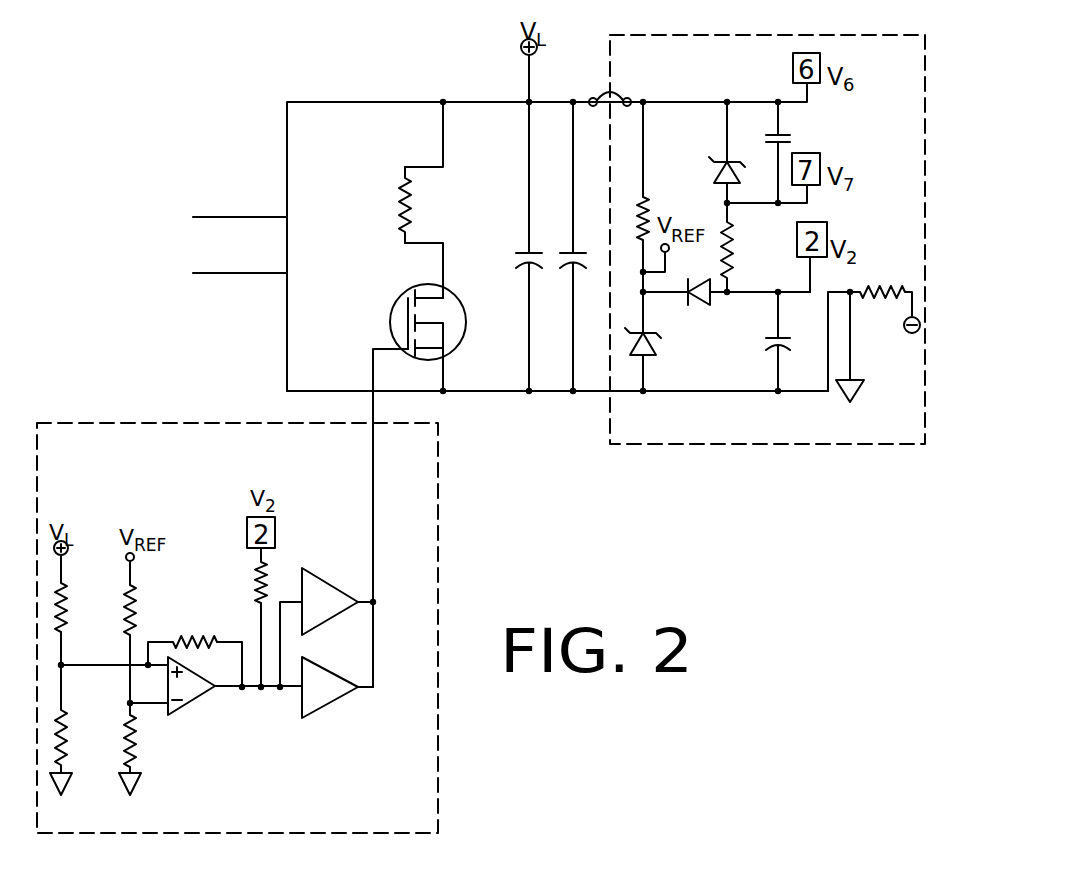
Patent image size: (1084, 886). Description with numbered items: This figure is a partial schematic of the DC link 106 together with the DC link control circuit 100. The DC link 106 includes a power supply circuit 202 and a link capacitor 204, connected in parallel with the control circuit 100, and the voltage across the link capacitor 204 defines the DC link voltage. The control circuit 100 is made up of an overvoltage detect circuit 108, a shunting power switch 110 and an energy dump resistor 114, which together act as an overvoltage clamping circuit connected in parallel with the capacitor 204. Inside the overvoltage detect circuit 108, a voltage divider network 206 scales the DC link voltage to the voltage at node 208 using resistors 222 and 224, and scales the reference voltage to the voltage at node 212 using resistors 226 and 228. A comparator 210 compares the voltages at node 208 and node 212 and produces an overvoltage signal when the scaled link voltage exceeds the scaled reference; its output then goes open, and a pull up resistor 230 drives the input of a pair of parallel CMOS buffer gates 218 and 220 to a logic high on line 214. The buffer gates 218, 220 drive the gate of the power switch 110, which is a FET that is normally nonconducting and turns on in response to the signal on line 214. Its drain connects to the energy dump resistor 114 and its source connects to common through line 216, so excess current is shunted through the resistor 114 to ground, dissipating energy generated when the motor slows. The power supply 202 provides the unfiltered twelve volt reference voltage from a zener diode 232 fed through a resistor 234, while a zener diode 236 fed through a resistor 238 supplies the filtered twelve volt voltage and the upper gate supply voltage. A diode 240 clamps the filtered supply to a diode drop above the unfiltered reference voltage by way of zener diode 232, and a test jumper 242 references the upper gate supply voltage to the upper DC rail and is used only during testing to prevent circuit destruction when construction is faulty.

The DC link control circuit 100 is at (138, 358).
The DC link 106 is at (513, 392).
The overvoltage detect circuit 108 is at (243, 458).
The power switch 110 is at (398, 300).
The energy dump resistor 114 is at (398, 203).
The power supply circuit 202 is at (710, 67).
The link capacitor 204 is at (514, 258).
The voltage divider network 206 is at (101, 778).
The node 208 is at (63, 667).
The comparator 210 is at (197, 699).
The node 212 is at (132, 706).
The line 214 is at (374, 494).
The line 216 is at (452, 380).
The CMOS buffer gate 218 is at (340, 568).
The CMOS buffer gate 220 is at (333, 708).
The resistor 222 is at (63, 612).
The resistor 224 is at (68, 742).
The resistor 226 is at (133, 616).
The resistor 228 is at (134, 744).
The pull up resistor 230 is at (270, 572).
The zener diode 232 is at (658, 343).
The resistor 234 is at (646, 204).
The zener diode 236 is at (742, 157).
The resistor 238 is at (735, 244).
The diode 240 is at (695, 305).
The test jumper 242 is at (602, 90).